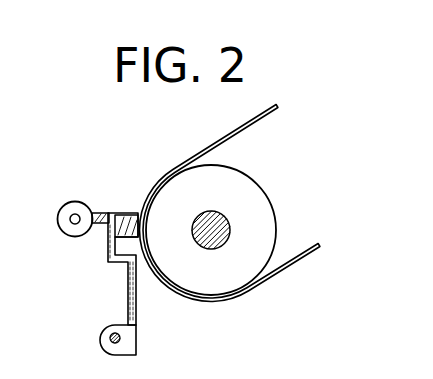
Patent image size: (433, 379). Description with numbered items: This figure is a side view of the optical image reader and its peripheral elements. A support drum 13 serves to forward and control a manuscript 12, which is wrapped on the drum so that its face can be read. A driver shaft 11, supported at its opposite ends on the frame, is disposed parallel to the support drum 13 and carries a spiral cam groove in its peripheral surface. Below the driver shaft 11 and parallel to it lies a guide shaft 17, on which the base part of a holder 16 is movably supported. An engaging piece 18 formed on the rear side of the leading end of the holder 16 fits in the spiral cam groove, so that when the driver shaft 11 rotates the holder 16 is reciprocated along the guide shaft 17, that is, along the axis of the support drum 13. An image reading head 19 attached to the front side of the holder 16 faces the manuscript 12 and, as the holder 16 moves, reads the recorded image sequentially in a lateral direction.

The driver shaft 11 is at (71, 204).
The manuscript 12 is at (239, 133).
The support drum 13 is at (248, 190).
The holder 16 is at (127, 288).
The guide shaft 17 is at (110, 337).
The engaging piece 18 is at (100, 213).
The image reading head 19 is at (130, 214).